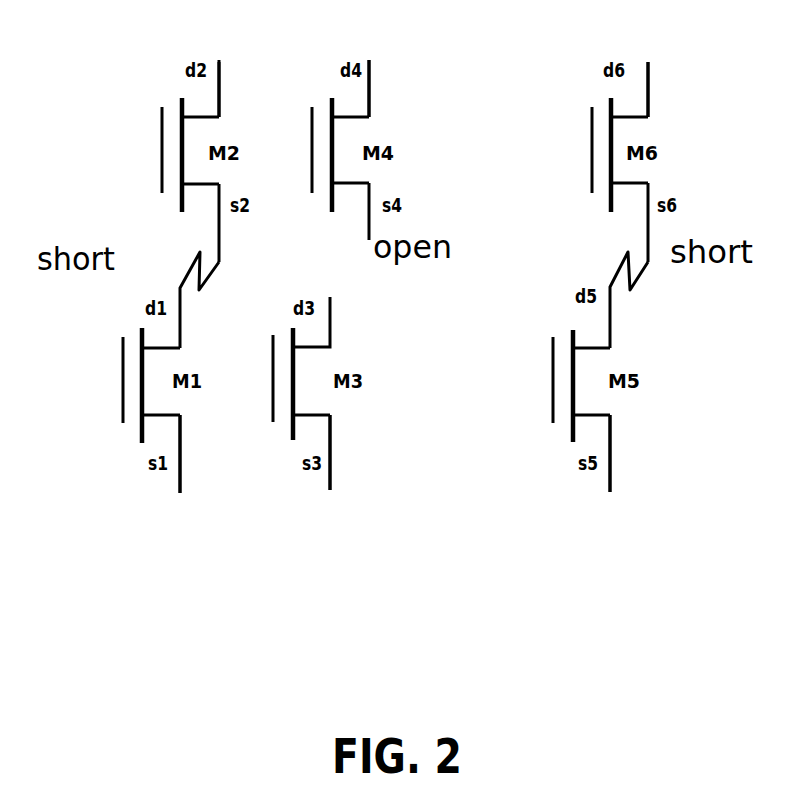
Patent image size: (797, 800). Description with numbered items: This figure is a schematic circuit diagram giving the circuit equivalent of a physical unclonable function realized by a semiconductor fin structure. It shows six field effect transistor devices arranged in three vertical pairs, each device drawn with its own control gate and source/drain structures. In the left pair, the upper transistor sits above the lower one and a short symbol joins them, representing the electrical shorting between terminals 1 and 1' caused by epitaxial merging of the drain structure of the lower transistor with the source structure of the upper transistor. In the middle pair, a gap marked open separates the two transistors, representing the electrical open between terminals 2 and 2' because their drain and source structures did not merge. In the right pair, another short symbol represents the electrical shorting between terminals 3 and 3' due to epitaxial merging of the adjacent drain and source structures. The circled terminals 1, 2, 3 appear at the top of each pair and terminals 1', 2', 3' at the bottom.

The terminal 1 is at (253, 59).
The terminal 2 is at (406, 59).
The terminal 3 is at (677, 59).
The terminal 1' is at (220, 472).
The terminal 2' is at (367, 472).
The terminal 3' is at (647, 462).